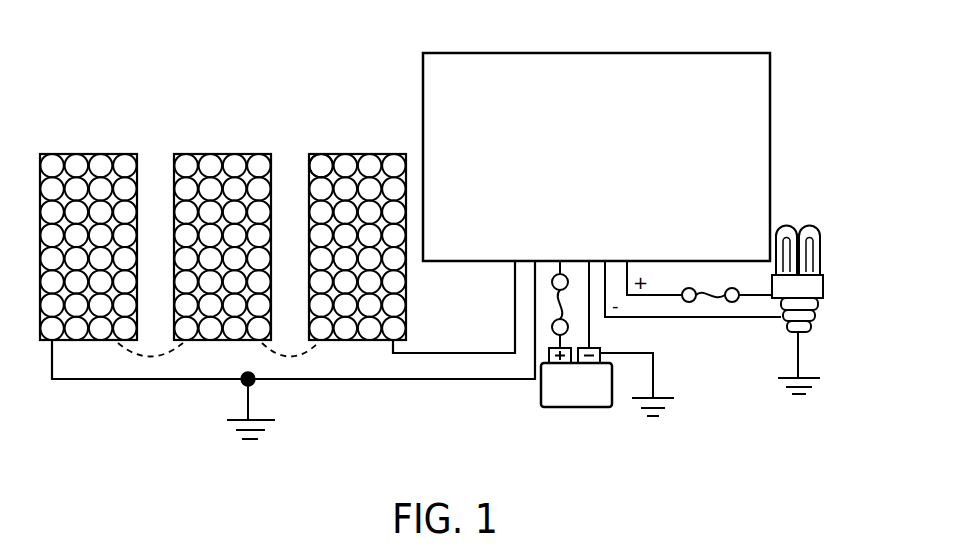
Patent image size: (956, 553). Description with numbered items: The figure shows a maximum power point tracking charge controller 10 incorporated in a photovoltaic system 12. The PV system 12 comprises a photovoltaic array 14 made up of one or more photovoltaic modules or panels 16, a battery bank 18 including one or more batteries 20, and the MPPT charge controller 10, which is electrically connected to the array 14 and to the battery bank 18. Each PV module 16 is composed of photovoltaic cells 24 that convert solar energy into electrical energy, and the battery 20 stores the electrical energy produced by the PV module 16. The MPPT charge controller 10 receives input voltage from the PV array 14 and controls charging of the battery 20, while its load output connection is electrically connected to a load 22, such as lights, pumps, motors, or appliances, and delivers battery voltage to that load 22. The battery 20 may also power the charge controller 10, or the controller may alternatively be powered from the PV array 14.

The MPPT charge controller 10 is at (686, 50).
The photovoltaic system 12 is at (347, 94).
The photovoltaic array 14 is at (338, 385).
The photovoltaic module 16 is at (61, 154).
The battery bank 18 is at (562, 414).
The battery 20 is at (593, 398).
The load 22 is at (830, 285).
The photovoltaic cell 24 is at (321, 165).